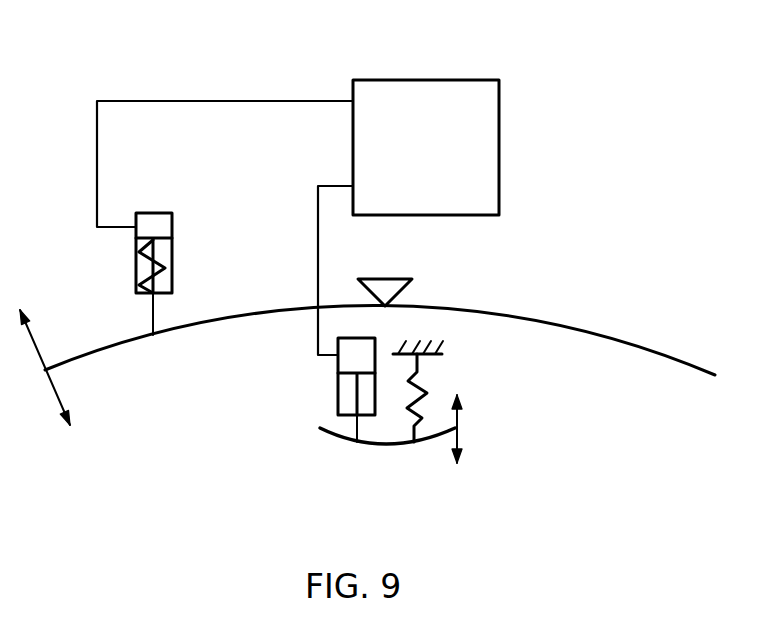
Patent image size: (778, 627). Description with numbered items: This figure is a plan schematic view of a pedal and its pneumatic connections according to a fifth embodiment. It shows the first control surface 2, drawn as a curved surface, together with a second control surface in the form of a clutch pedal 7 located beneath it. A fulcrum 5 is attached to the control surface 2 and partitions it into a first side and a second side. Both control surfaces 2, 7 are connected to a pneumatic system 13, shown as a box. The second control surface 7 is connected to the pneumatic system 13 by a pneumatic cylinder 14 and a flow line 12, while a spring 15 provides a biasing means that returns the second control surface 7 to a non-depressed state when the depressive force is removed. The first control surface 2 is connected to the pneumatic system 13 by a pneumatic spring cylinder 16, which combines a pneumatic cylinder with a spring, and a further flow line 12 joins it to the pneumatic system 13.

The control surface 2 is at (652, 343).
The fulcrum 5 is at (420, 287).
The clutch pedal 7 is at (385, 448).
The flow line 12 is at (183, 98).
The pneumatic system 13 is at (447, 92).
The pneumatic cylinder 14 is at (338, 392).
The spring 15 is at (420, 370).
The pneumatic spring cylinder 16 is at (136, 256).